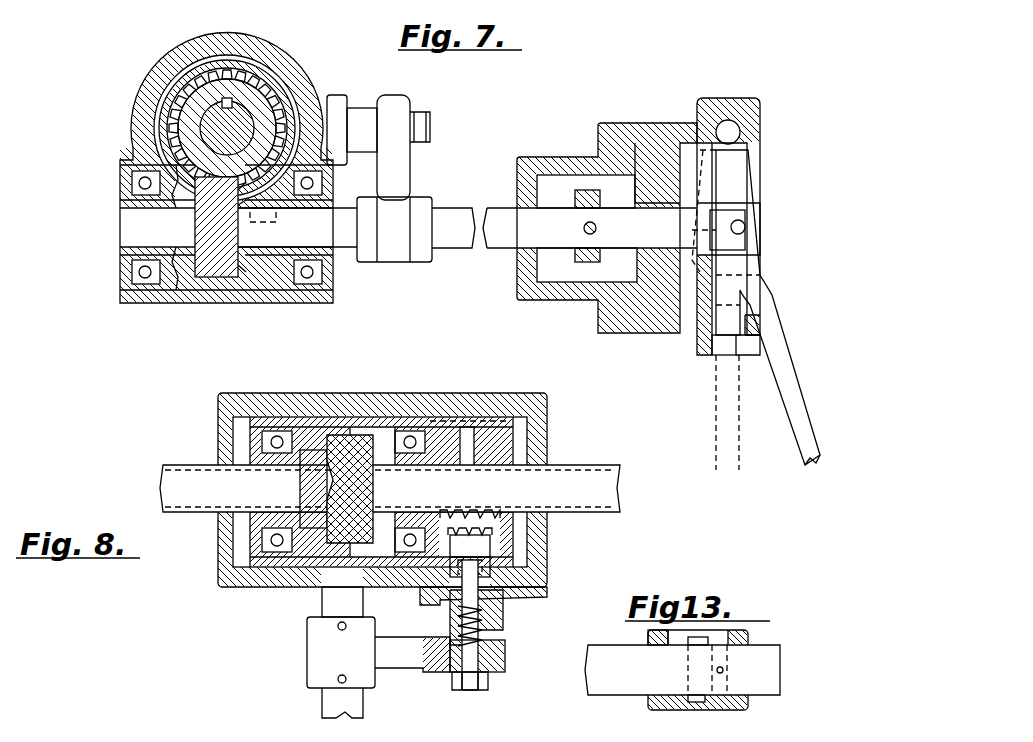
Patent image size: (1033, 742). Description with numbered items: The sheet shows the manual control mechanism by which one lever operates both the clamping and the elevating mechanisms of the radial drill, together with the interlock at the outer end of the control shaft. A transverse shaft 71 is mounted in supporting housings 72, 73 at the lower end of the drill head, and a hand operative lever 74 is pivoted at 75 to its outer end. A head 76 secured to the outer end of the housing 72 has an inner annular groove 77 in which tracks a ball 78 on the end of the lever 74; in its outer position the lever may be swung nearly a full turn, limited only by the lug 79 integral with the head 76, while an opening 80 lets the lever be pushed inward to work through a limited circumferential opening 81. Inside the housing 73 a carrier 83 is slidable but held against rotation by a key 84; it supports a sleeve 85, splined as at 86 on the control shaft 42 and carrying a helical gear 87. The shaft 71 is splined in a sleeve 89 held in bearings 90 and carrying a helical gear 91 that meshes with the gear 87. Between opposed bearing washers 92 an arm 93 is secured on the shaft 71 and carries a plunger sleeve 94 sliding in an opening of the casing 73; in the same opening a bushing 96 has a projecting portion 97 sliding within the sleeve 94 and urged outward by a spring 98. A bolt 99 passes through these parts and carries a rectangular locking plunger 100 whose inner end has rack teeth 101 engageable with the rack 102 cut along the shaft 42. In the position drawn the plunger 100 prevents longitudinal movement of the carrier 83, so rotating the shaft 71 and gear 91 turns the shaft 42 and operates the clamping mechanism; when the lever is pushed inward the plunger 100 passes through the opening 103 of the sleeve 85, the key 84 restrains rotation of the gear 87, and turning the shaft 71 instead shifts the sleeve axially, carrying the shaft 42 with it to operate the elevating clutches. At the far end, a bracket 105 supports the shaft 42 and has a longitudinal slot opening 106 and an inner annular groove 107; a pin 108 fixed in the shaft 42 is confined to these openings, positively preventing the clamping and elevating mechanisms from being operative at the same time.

In FIG. 7, the control shaft 42 is at (236, 118).
In FIG. 8, the control shaft 42 is at (390, 488).
In FIG. 13, the control shaft 42 is at (682, 670).
In FIG. 7, the transverse shaft 71 is at (467, 228).
In FIG. 8, the transverse shaft 71 is at (358, 706).
In FIG. 7, the supporting housing 72 is at (574, 140).
In FIG. 7, the supporting housing 73 is at (292, 62).
In FIG. 8, the supporting housing 73 is at (300, 406).
In FIG. 7, the hand operative lever 74 is at (775, 297).
In FIG. 7, the pivot 75 is at (746, 227).
In FIG. 7, the head 76 is at (660, 123).
In FIG. 7, the inner annular groove 77 is at (724, 122).
In FIG. 7, the ball 78 is at (735, 130).
In FIG. 7, the lug 79 is at (768, 357).
In FIG. 7, the opening 80 is at (752, 335).
In FIG. 7, the circumferential opening 81 is at (724, 350).
In FIG. 7, the carrier 83 is at (283, 100).
In FIG. 8, the carrier 83 is at (405, 426).
In FIG. 8, the key 84 is at (470, 420).
In FIG. 8, the sleeve 85 is at (340, 440).
In FIG. 8, the spline 86 is at (277, 462).
In FIG. 7, the helical gear 87 is at (213, 78).
In FIG. 8, the helical gear 87 is at (340, 543).
In FIG. 7, the sleeve 89 is at (176, 200).
In FIG. 7, the bearings 90 is at (146, 290).
In FIG. 7, the helical gear 91 is at (232, 277).
In FIG. 7, the bearing washers 92 is at (420, 262).
In FIG. 8, the bearing washers 92 is at (307, 677).
In FIG. 7, the arm 93 is at (400, 172).
In FIG. 8, the arm 93 is at (412, 654).
In FIG. 7, the plunger sleeve 94 is at (353, 130).
In FIG. 8, the plunger sleeve 94 is at (500, 616).
In FIG. 8, the bushing 96 is at (520, 594).
In FIG. 8, the projecting portion 97 is at (455, 612).
In FIG. 8, the spring 98 is at (485, 634).
In FIG. 8, the bolt 99 is at (505, 663).
In FIG. 8, the locking plunger 100 is at (490, 568).
In FIG. 8, the rack teeth 101 is at (490, 543).
In FIG. 8, the rack 102 is at (470, 499).
In FIG. 8, the opening 103 is at (488, 525).
In FIG. 13, the bracket 105 is at (748, 709).
In FIG. 13, the slot opening 106 is at (660, 638).
In FIG. 13, the inner annular groove 107 is at (700, 703).
In FIG. 13, the pin 108 is at (715, 643).